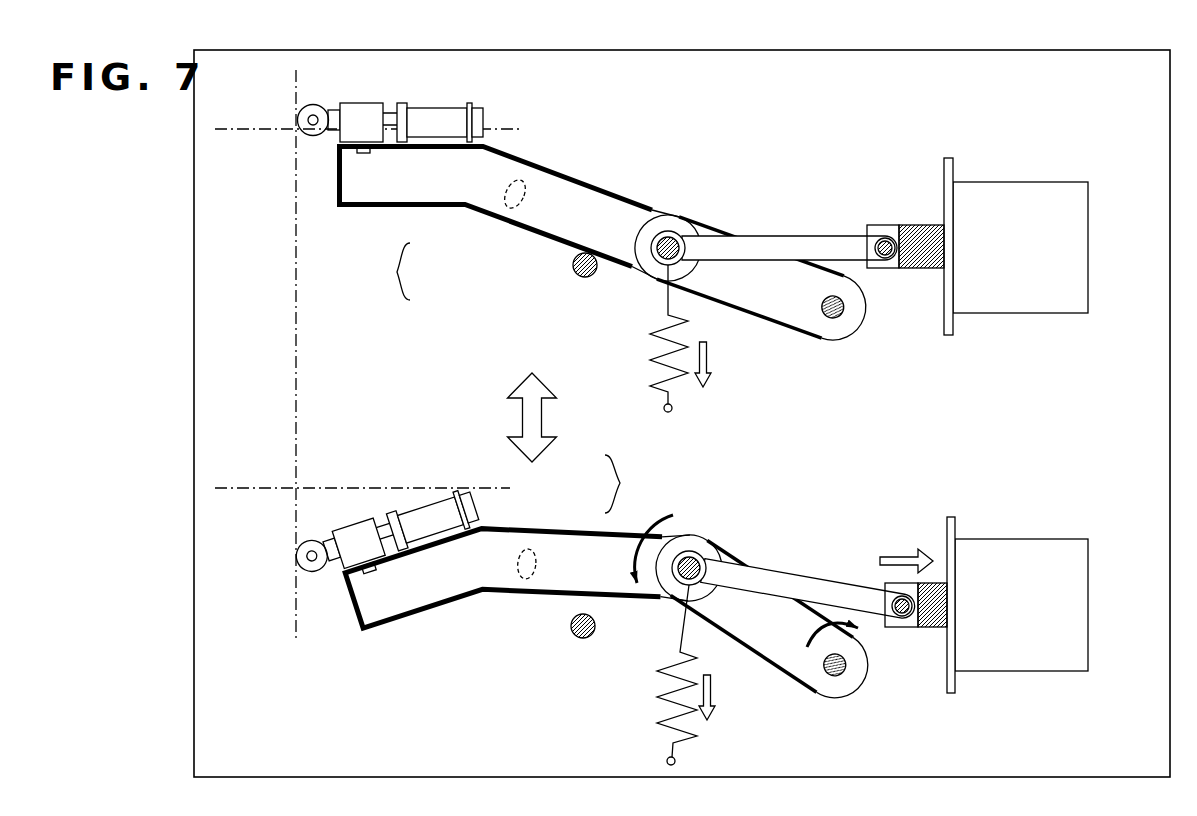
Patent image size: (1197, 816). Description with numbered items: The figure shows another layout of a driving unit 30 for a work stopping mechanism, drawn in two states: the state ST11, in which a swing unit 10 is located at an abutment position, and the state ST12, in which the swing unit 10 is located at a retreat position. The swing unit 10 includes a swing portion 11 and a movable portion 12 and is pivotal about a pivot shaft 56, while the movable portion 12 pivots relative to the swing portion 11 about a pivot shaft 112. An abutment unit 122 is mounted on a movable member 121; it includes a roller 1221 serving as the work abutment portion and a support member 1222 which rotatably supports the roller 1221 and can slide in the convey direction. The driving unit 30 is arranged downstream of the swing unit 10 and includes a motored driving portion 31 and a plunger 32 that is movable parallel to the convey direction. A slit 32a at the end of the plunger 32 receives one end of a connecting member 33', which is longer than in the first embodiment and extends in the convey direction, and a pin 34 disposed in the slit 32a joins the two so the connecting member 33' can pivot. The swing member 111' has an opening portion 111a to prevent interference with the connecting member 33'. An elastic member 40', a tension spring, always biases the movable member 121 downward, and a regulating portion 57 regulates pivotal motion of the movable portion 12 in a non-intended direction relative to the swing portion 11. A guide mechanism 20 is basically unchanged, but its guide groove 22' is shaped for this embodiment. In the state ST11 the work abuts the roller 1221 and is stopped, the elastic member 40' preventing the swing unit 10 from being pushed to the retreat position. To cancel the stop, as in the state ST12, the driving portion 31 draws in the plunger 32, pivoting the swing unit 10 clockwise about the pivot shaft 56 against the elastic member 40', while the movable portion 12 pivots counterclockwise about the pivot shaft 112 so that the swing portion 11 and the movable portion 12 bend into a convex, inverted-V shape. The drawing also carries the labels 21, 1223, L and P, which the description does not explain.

The swing unit 10 is at (777, 439).
The swing portion 11 is at (767, 463).
The movable portion 12 is at (460, 382).
The guide mechanism 20 is at (505, 381).
The medium sheet 21 is at (502, 212).
The guide groove 22' is at (510, 379).
The driving unit 30 is at (989, 442).
The driving portion 31 is at (1089, 214).
The plunger 32 is at (889, 439).
The slit 32a is at (886, 224).
The connecting member 33' is at (799, 394).
The pin 34 is at (892, 268).
The elastic member 40' is at (642, 515).
The pivot shaft 56 is at (843, 314).
The regulating portion 57 is at (580, 278).
The opening portion 111a is at (718, 230).
The swing member 111' is at (753, 480).
The pivot shaft 112 is at (668, 235).
The movable member 121 is at (345, 210).
The abutment unit 122 is at (425, 344).
The roller 1221 is at (305, 138).
The support member 1222 is at (378, 103).
The piston cylinder 1223 is at (452, 104).
The axis line L is at (268, 128).
The reference plane P is at (293, 375).
The state ST11 is at (1068, 130).
The state ST12 is at (1068, 487).